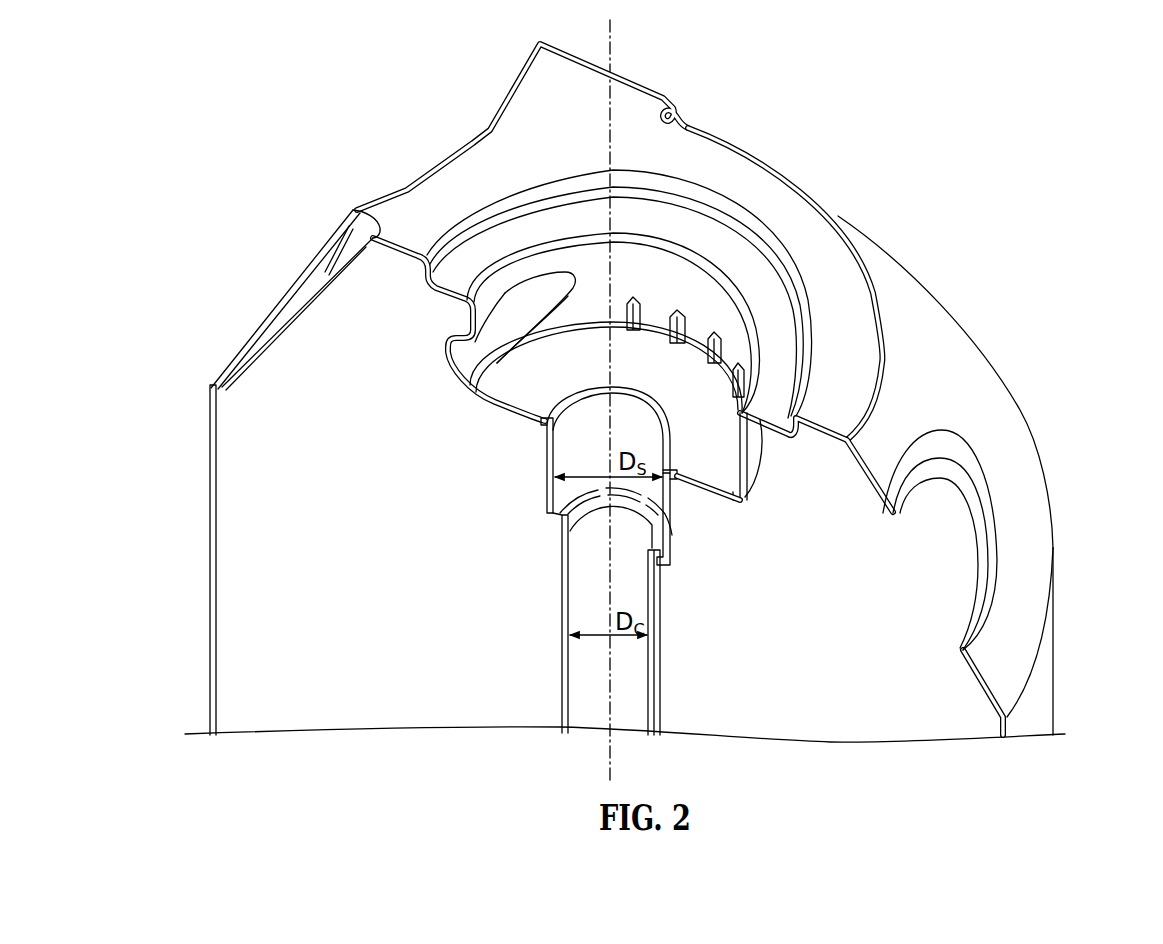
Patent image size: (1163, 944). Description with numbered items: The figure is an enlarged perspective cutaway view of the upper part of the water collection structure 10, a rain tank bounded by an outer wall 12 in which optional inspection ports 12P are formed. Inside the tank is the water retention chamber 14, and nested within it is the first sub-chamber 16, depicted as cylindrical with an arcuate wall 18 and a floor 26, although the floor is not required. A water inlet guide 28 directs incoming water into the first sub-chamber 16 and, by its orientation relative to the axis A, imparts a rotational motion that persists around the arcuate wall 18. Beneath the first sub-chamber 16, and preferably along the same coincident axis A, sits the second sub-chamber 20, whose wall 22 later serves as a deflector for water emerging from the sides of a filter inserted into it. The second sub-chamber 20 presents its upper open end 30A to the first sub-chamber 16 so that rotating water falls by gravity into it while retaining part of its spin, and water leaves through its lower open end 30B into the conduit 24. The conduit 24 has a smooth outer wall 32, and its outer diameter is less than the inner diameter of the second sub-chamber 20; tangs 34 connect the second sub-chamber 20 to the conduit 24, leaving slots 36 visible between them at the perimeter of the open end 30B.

The water collection structure 10 is at (895, 128).
The outer wall 12 is at (210, 666).
The inspection ports 12P is at (300, 273).
The water retention chamber 14 is at (301, 540).
The first sub-chamber 16 is at (598, 292).
The wall 18 is at (660, 280).
The second sub-chamber 20 is at (652, 438).
The wall 22 is at (587, 457).
The conduit 24 is at (658, 686).
The floor 26 is at (676, 365).
The water inlet guide 28 is at (531, 295).
The open end 30A is at (573, 442).
The open end 30B is at (589, 521).
The outer wall 32 is at (658, 626).
The tangs 34 is at (547, 518).
The slots 36 is at (676, 497).
The axis A is at (621, 42).